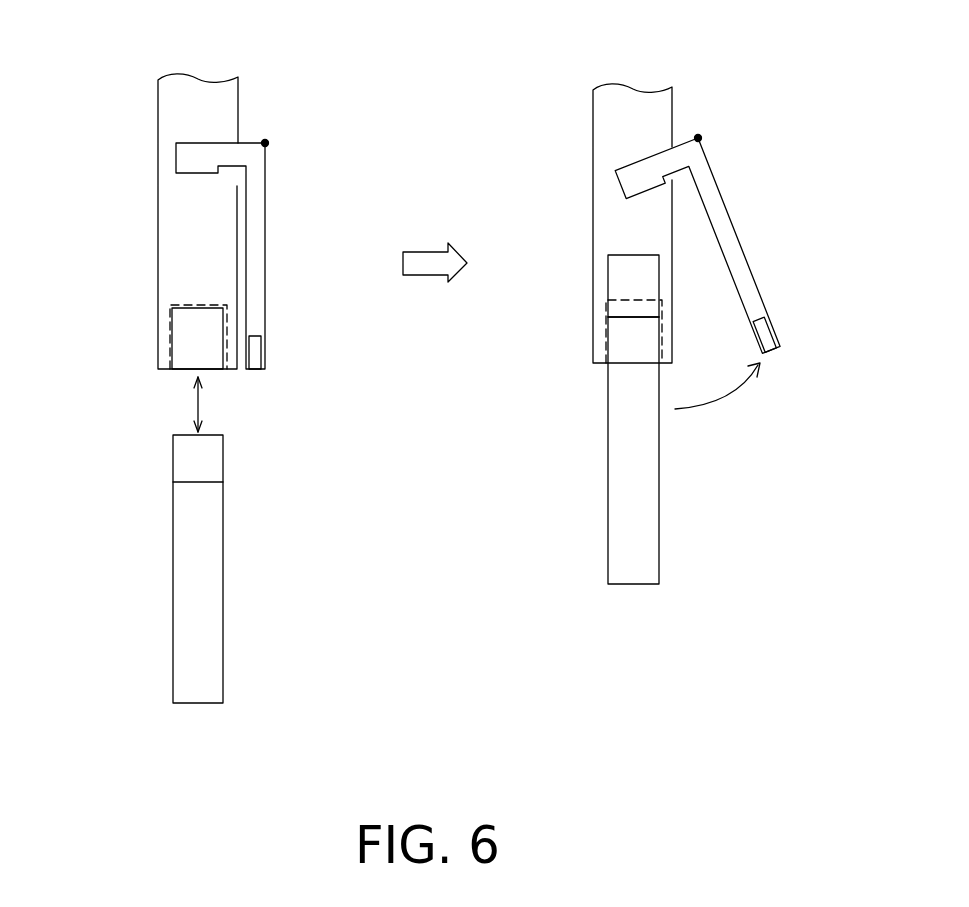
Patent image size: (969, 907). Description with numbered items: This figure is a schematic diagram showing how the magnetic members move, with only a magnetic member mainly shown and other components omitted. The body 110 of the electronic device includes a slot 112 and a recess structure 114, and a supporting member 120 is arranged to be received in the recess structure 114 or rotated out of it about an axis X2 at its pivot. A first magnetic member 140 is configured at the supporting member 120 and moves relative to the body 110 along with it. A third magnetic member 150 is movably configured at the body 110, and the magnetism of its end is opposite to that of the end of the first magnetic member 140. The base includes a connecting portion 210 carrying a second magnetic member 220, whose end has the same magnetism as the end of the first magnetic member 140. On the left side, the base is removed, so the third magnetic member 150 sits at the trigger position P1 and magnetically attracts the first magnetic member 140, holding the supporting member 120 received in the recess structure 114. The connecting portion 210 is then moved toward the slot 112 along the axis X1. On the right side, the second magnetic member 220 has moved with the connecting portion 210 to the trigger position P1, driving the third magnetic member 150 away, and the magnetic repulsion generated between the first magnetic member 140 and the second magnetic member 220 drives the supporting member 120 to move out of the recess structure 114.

The body 110 is at (207, 98).
The slot 112 is at (178, 235).
The recess structure 114 is at (240, 219).
The supporting member 120 is at (259, 276).
The first magnetic member 140 is at (255, 363).
The third magnetic member 150 is at (183, 344).
The connecting portion 210 is at (183, 553).
The second magnetic member 220 is at (183, 462).
The axis X1 is at (195, 402).
The axis X2 is at (258, 131).
The trigger position P1 is at (166, 315).